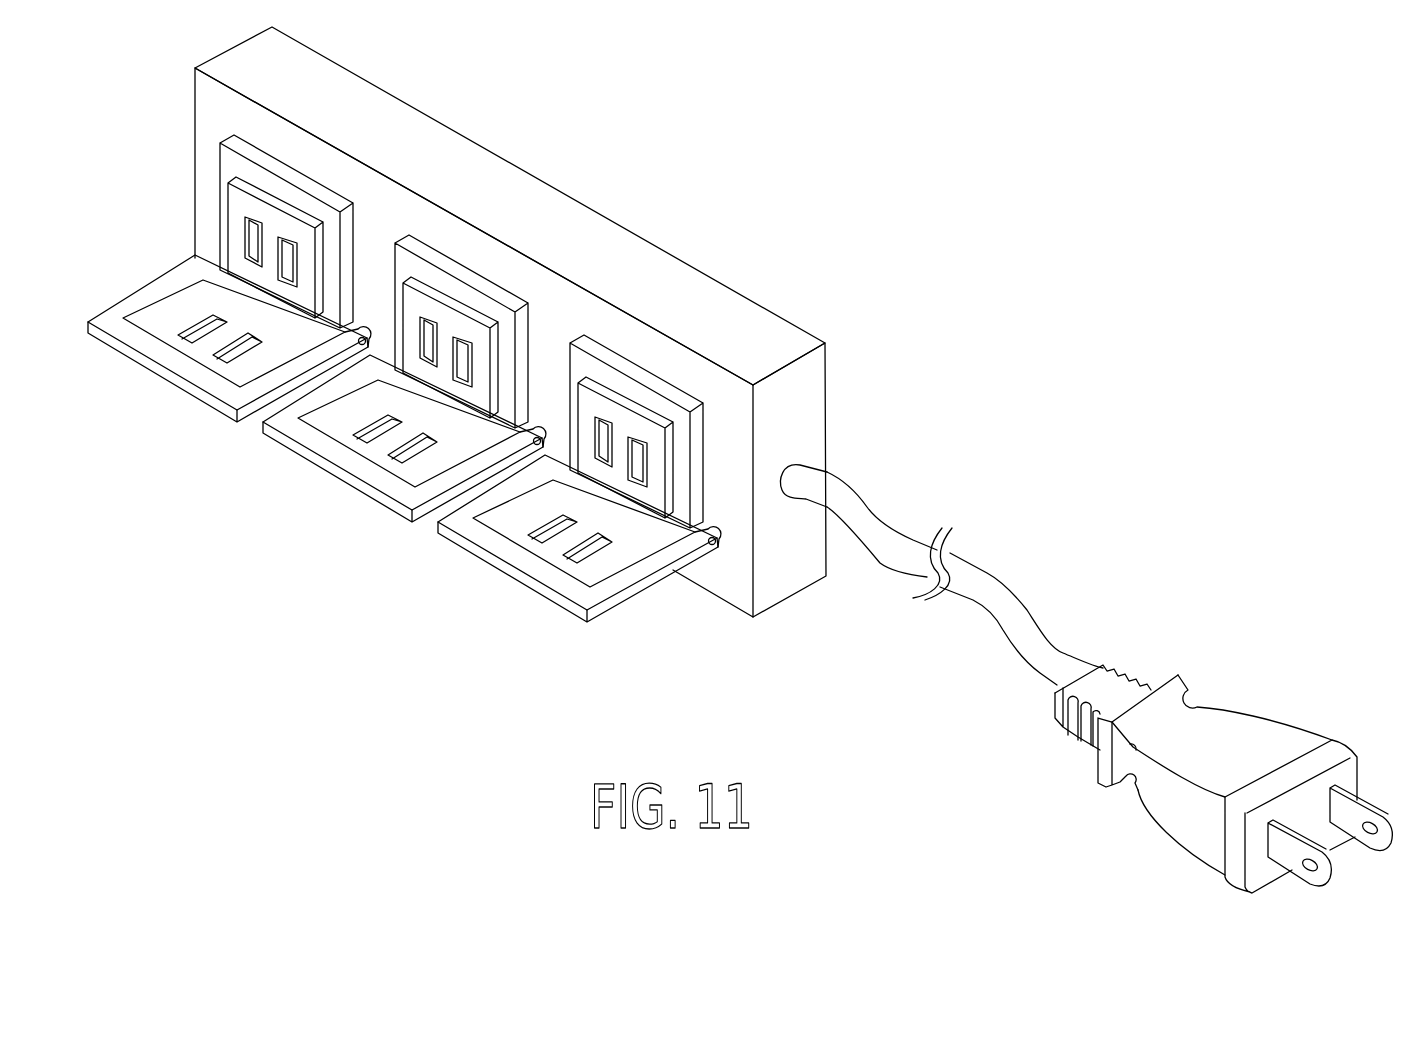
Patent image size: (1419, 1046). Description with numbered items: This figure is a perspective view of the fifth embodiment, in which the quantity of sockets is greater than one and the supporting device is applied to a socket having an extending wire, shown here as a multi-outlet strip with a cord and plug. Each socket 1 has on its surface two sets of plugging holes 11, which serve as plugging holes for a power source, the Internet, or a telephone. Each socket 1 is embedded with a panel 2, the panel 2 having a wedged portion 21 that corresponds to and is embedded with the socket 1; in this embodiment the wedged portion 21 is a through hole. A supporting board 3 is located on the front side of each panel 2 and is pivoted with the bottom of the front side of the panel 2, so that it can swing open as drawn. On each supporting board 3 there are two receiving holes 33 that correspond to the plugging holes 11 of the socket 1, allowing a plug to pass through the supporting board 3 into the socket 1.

The socket 1 is at (739, 431).
The plugging holes 11 is at (647, 440).
The panel 2 is at (677, 403).
The wedged portion 21 is at (673, 440).
The supporting board 3 is at (579, 564).
The receiving holes 33 is at (573, 563).